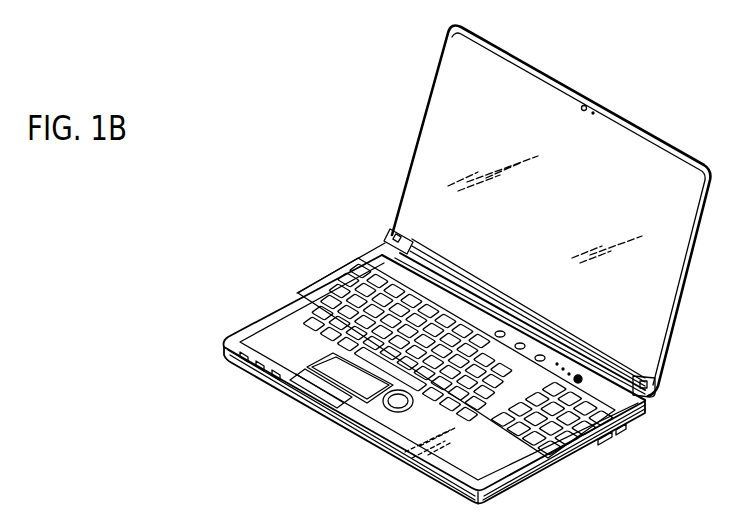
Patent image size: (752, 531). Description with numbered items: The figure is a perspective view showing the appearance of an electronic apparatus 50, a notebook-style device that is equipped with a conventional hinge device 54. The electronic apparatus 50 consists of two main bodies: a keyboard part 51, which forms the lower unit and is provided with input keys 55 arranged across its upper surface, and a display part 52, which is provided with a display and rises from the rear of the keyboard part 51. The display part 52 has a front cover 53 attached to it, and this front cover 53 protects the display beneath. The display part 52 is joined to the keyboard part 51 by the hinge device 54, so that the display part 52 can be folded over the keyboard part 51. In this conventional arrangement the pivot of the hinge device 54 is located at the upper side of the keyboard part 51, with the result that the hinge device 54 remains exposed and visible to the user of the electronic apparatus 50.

The electronic apparatus 50 is at (255, 95).
The keyboard part 51 is at (323, 273).
The display part 52 is at (430, 90).
The front cover 53 is at (545, 120).
The hinge device 54 is at (423, 218).
The input keys 55 is at (297, 292).